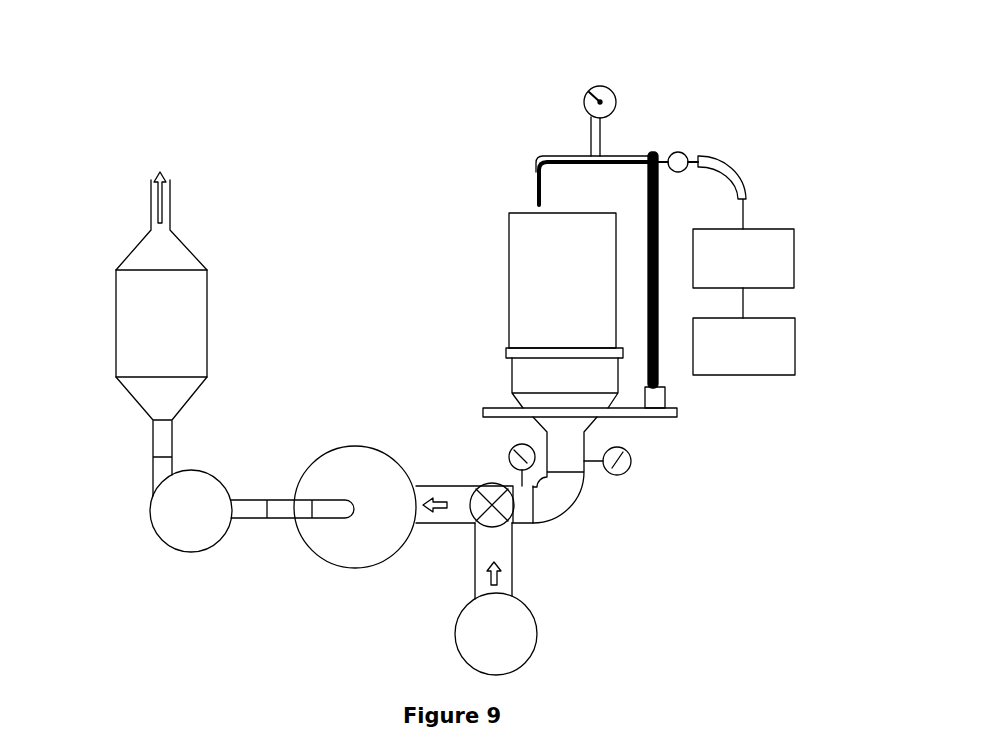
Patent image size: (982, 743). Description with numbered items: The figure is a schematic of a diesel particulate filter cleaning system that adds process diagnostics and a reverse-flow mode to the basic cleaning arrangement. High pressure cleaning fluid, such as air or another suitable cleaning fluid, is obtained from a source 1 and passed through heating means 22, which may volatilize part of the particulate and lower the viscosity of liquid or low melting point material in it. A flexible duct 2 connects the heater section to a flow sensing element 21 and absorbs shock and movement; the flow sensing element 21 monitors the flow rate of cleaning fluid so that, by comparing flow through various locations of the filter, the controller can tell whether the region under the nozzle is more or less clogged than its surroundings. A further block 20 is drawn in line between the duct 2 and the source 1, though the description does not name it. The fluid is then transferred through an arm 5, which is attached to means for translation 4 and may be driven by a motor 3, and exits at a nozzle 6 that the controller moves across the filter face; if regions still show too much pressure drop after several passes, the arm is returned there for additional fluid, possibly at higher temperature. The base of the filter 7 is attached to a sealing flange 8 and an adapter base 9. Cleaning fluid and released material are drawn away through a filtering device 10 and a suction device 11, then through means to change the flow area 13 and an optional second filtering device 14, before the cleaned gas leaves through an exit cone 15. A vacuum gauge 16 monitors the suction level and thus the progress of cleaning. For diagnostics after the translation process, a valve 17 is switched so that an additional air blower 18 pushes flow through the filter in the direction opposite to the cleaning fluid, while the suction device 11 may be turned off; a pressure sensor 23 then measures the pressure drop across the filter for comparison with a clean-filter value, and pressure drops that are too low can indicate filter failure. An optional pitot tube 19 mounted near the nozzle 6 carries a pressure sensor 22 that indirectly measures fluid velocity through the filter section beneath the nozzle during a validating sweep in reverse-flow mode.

The source of high pressure fluid 1 is at (815, 340).
The flexible duct 2 is at (750, 218).
The motor 3 is at (682, 394).
The means for translation 4 is at (660, 176).
The arm 5 is at (620, 148).
The nozzle 6 is at (527, 198).
The filter 7 is at (508, 268).
The sealing flange 8 is at (505, 348).
The adapter base 9 is at (500, 378).
The filtering device 10 is at (325, 563).
The suction device 11 is at (160, 547).
The means to change the flow area 13 is at (120, 405).
The second filtering device 14 is at (105, 316).
The exit cone 15 is at (118, 253).
The vacuum gauge 16 is at (506, 458).
The valve 17 is at (520, 524).
The air blower 18 is at (436, 638).
The pitot tube 19 is at (548, 150).
The power supply 20 is at (798, 263).
The flow sensing element 21 is at (690, 148).
The heater 22 is at (582, 96).
The pressure sensor 23 is at (633, 462).